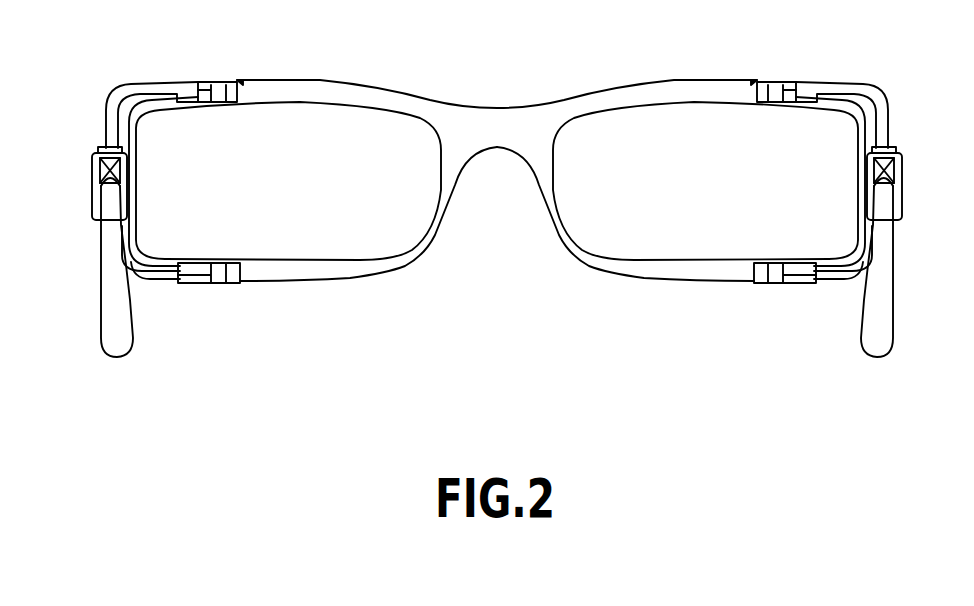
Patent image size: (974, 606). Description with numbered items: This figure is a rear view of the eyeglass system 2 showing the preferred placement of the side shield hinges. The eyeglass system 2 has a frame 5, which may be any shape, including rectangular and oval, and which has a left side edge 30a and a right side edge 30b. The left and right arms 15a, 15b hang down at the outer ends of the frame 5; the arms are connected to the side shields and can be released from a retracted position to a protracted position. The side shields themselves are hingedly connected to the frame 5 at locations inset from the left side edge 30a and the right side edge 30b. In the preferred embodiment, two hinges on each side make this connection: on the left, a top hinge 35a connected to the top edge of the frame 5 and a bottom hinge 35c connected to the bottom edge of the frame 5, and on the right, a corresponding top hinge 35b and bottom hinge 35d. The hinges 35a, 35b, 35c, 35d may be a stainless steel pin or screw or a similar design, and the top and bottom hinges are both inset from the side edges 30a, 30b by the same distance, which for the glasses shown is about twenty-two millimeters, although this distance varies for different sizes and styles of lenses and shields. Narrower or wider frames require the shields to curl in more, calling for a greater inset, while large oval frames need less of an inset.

The eyeglass system 2 is at (501, 260).
The frame 5 is at (691, 84).
The left arm 15a is at (112, 337).
The right arm 15b is at (884, 337).
The left side edge 30a is at (107, 114).
The right side edge 30b is at (888, 114).
The top left hinge 35a is at (205, 81).
The top right hinge 35b is at (788, 84).
The bottom left hinge 35c is at (207, 285).
The bottom right hinge 35d is at (786, 285).